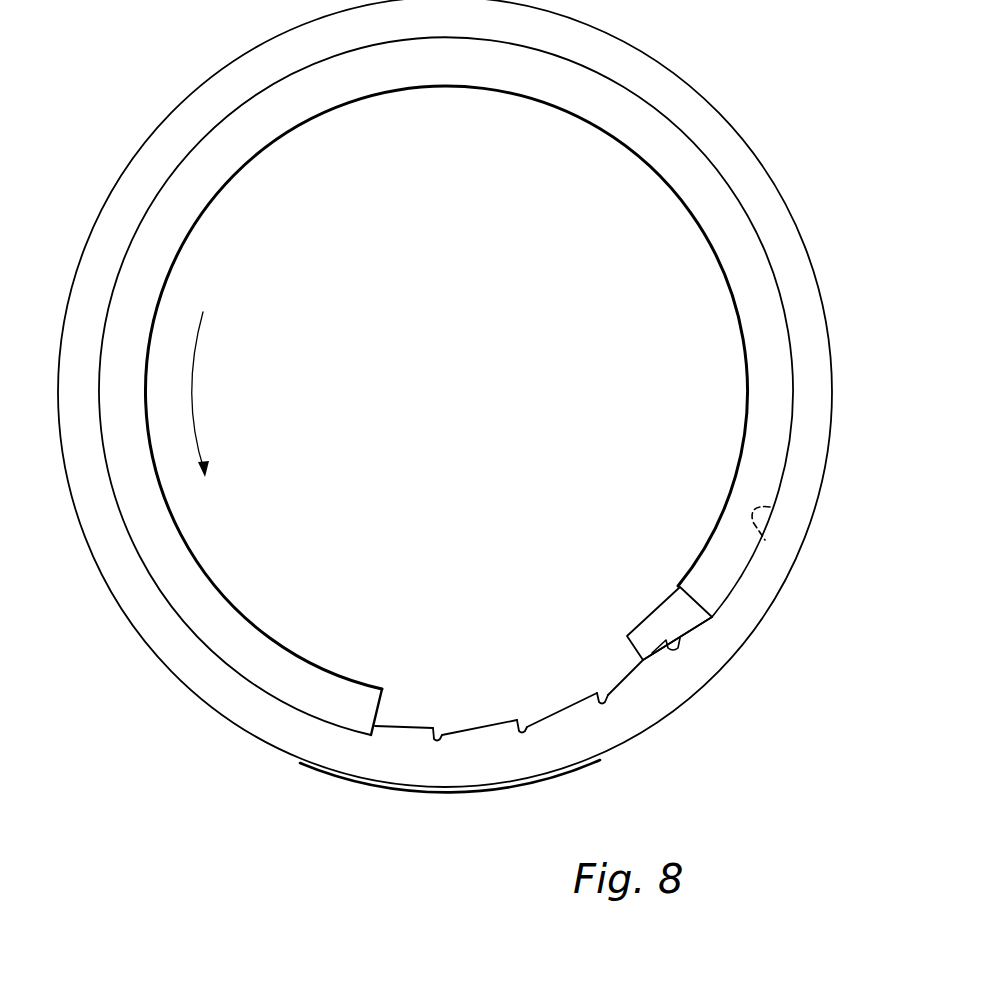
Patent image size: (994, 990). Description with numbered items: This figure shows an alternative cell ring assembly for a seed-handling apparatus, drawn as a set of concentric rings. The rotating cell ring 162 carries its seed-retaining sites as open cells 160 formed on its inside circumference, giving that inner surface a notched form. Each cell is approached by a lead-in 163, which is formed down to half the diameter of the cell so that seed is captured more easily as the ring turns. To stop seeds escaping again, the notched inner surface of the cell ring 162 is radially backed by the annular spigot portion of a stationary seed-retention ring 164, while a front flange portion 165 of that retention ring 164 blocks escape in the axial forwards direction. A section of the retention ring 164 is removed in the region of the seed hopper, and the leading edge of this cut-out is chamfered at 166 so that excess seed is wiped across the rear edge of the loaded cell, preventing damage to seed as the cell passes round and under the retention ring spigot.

The open cells 160 is at (518, 749).
The cell ring 162 is at (736, 155).
The lead-ins 163 is at (532, 710).
The seed-retention ring 164 is at (708, 216).
The front flange portion 165 is at (765, 540).
The chamfer 166 is at (655, 630).